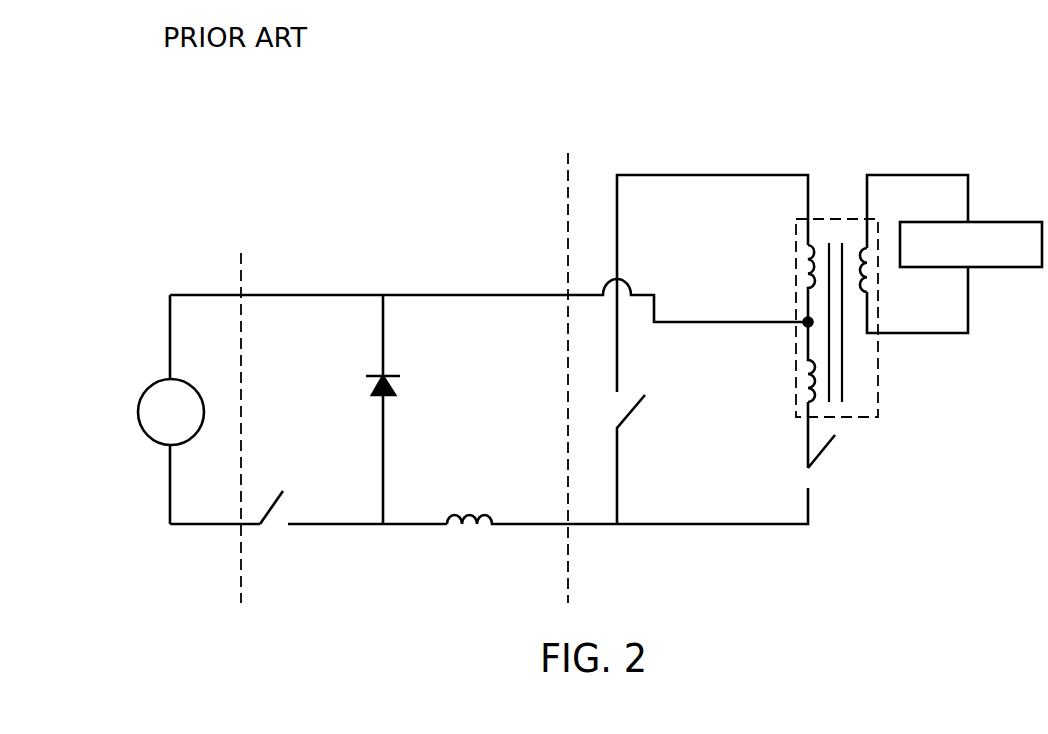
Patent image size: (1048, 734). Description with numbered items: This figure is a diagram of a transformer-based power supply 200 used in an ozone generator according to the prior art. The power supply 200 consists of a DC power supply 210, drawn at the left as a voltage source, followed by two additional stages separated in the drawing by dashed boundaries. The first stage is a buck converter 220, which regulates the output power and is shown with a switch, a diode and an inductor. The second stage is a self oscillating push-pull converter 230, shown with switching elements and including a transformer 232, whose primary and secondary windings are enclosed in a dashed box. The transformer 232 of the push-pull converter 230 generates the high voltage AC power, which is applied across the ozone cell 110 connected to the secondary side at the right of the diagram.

The transformer-based power supply 200 is at (676, 122).
The DC power supply 210 is at (146, 394).
The buck converter 220 is at (408, 586).
The self oscillating push-pull converter 230 is at (732, 582).
The transformer 232 is at (879, 386).
The ozone cell 110 is at (1003, 222).